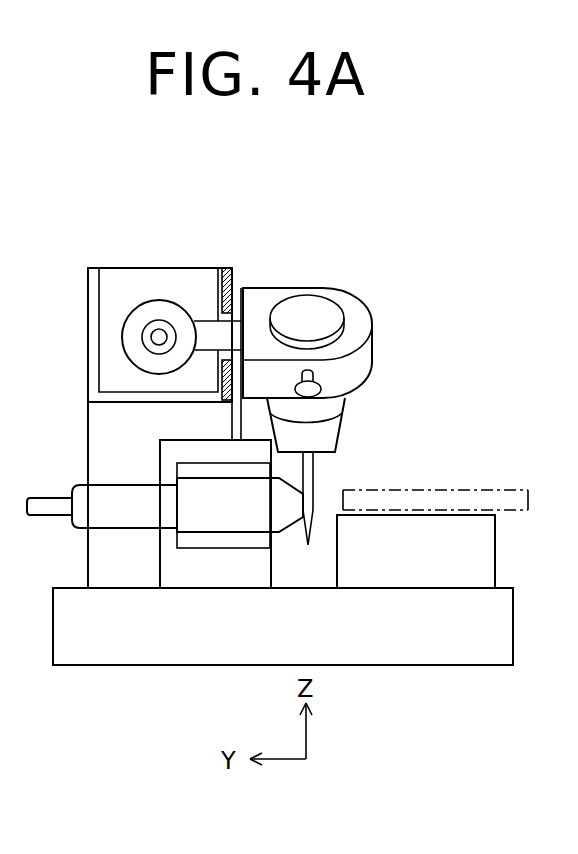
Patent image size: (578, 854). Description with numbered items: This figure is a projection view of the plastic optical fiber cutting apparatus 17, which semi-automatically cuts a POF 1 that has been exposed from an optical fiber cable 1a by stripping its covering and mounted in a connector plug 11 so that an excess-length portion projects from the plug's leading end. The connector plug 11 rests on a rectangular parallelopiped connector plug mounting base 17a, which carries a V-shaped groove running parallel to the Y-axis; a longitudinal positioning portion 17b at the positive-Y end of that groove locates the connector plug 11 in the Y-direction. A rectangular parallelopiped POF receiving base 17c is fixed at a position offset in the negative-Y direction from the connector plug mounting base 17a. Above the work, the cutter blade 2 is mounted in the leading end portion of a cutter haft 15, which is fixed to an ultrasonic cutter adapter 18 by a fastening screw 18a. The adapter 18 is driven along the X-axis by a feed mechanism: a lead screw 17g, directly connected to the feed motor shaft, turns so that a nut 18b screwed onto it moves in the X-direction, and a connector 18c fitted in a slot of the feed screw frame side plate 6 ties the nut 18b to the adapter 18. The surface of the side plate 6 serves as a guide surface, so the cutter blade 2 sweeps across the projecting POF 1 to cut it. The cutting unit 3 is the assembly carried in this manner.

The POF 1 is at (45, 518).
The optical fiber cable 1a is at (107, 485).
The cutter blade 2 is at (313, 470).
The machining unit 3 is at (318, 258).
The feed screw frame side plate 6 is at (234, 287).
The connector plug 11 is at (272, 540).
The cutter haft 15 is at (347, 407).
The plastic optical fiber cutting apparatus 17 is at (378, 243).
The connector plug mounting base 17a is at (233, 568).
The longitudinal positioning portion 17b is at (175, 532).
The POF receiving base 17c is at (495, 553).
The lead screw 17g is at (120, 342).
The ultrasonic cutter adapter 18 is at (358, 297).
The fastening screw 18a is at (370, 372).
The nut 18b is at (143, 300).
The connector 18c is at (207, 317).